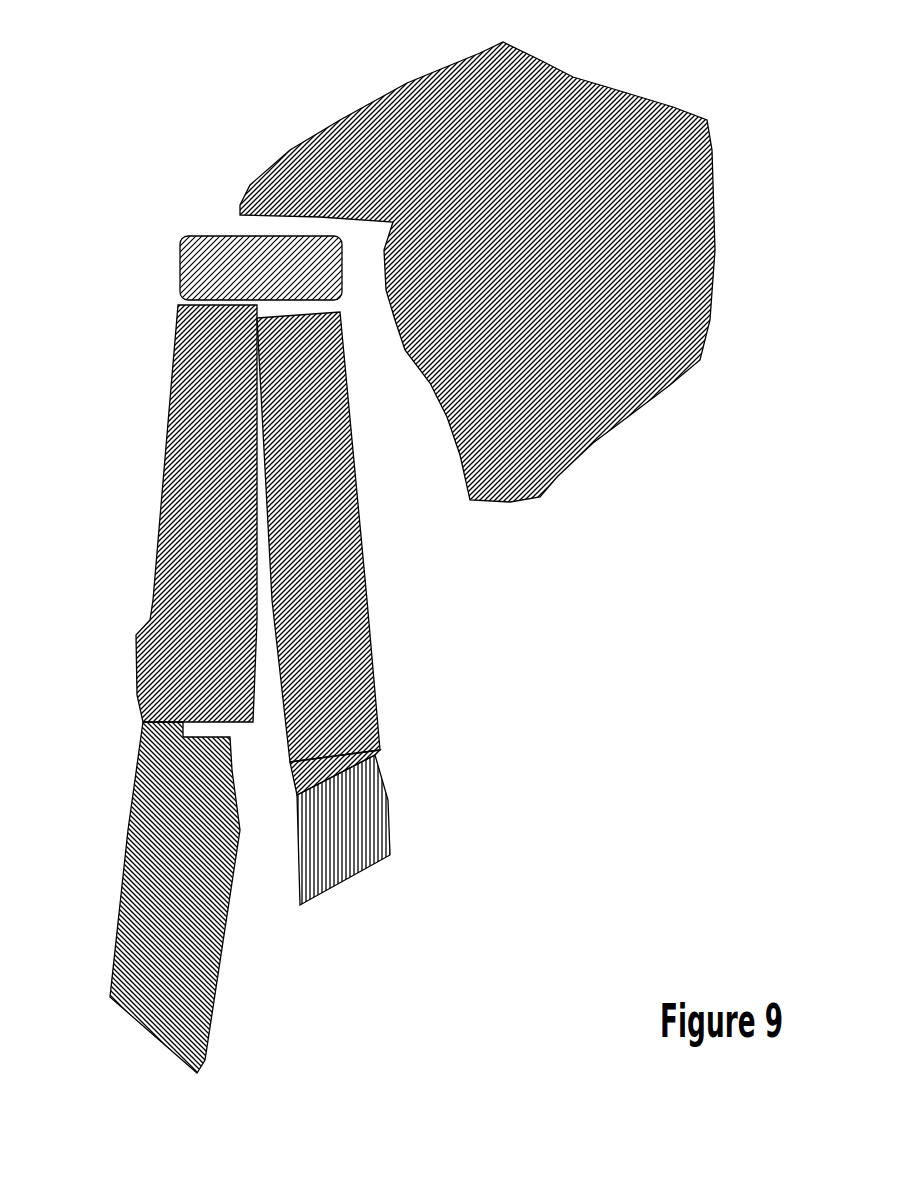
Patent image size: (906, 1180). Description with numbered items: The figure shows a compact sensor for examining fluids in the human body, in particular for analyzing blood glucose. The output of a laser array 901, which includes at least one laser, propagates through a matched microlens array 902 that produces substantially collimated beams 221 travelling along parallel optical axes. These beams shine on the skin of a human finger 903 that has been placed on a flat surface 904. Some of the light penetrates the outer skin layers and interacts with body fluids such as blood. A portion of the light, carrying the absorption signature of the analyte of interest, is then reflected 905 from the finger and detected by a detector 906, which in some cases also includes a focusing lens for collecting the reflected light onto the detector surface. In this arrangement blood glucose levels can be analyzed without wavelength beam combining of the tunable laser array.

The human finger 903 is at (477, 254).
The flat surface 904 is at (193, 223).
The reflected light 905 is at (180, 513).
The detector 906 is at (110, 957).
The collimated beams 221 is at (373, 560).
The microlens array 902 is at (383, 710).
The laser array 901 is at (261, 689).